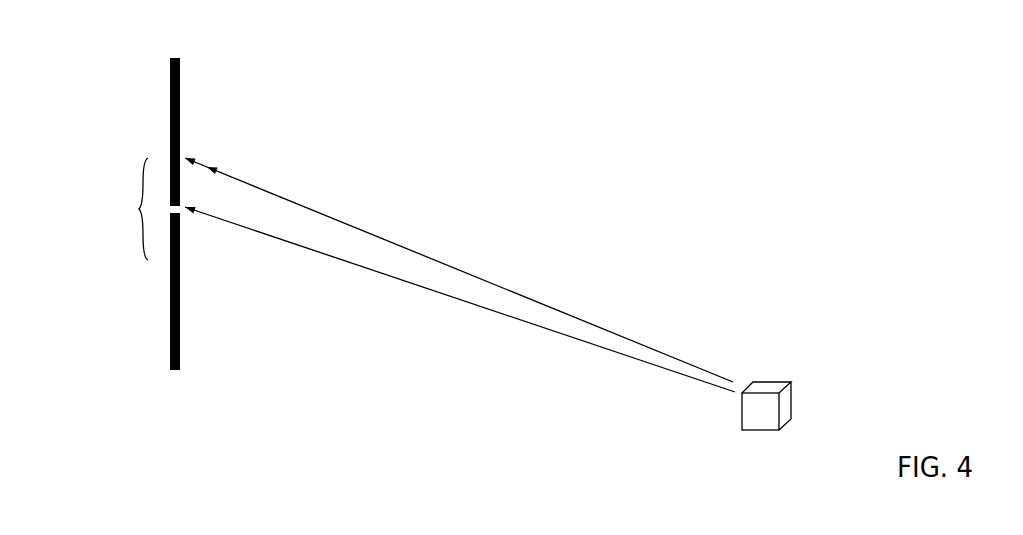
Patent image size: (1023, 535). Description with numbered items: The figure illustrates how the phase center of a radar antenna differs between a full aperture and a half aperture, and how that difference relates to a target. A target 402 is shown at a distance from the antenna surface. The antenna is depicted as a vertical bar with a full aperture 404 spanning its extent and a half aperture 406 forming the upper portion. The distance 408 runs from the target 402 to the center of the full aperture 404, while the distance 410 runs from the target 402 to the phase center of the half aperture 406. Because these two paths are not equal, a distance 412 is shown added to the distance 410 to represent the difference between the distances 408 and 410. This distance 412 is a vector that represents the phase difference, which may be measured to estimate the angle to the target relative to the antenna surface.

The target 402 is at (786, 402).
The full aperture 404 is at (139, 209).
The half aperture 406 is at (170, 82).
The distance 408 is at (473, 303).
The distance 410 is at (490, 283).
The distance 412 is at (202, 163).